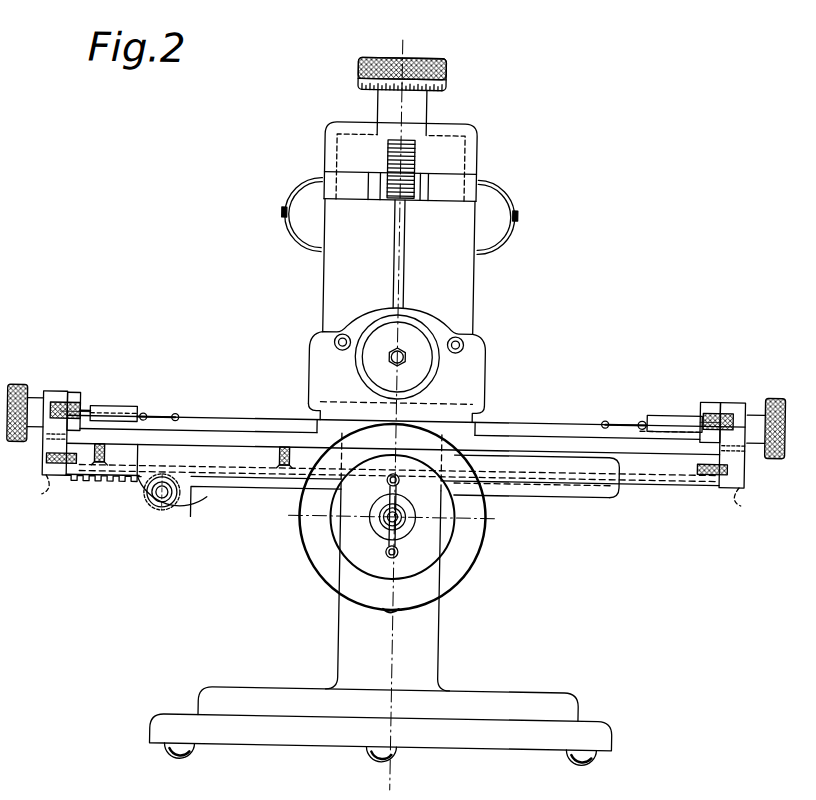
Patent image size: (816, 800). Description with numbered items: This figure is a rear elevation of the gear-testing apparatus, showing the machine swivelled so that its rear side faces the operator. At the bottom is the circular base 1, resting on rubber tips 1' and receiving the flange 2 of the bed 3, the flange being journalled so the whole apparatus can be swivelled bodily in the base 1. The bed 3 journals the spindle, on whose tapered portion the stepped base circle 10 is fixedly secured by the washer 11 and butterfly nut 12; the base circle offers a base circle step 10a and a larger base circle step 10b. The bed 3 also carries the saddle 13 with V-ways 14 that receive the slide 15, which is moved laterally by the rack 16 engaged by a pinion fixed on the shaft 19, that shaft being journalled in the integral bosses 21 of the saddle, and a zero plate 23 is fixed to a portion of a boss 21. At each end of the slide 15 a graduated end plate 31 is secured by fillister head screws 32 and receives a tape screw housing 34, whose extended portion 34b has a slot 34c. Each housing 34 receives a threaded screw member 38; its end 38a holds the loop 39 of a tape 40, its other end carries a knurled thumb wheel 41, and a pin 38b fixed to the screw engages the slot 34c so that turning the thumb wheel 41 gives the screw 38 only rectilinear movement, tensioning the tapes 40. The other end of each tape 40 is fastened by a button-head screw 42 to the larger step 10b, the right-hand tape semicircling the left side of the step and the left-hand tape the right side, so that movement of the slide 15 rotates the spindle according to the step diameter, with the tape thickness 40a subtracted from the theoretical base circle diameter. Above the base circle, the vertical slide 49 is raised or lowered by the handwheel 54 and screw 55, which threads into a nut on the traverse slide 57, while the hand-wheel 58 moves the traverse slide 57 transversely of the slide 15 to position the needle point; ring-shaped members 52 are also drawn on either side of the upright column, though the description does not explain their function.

The base 1 is at (402, 725).
The rubber tips 1' is at (402, 765).
The flange 2 is at (578, 703).
The bed 3 is at (344, 641).
The base circle 10 is at (372, 546).
The base circle step 10a is at (460, 540).
The base circle step 10b is at (481, 565).
The washer 11 is at (378, 528).
The butterfly nut 12 is at (400, 538).
The saddle 13 is at (601, 488).
The V-ways 14 is at (665, 475).
The slide 15 is at (208, 433).
The rack 16 is at (86, 487).
The shaft 19 is at (161, 503).
The bosses 21 is at (173, 497).
The zero plate 23 is at (132, 525).
The graduated end plates 31 is at (46, 395).
The fillister head screws 32 is at (45, 466).
The tape screw housing 34 is at (70, 397).
The extended portion 34b is at (700, 400).
The slot 34c is at (110, 410).
The threaded screw member 38 is at (128, 414).
The end of threaded screw member 38a is at (145, 414).
The pin 38b is at (138, 414).
The loop 39 is at (155, 412).
The tape 40 is at (270, 414).
The tape thickness 40a is at (508, 438).
The knurled thumb wheel 41 is at (17, 390).
The button-head screw 42 is at (401, 612).
The slide 49 is at (475, 163).
The ring handle 52 is at (287, 197).
The handwheel 54 is at (441, 71).
The screw 55 is at (400, 160).
The traverse slide 57 is at (447, 277).
The hand-wheel 58 is at (418, 345).